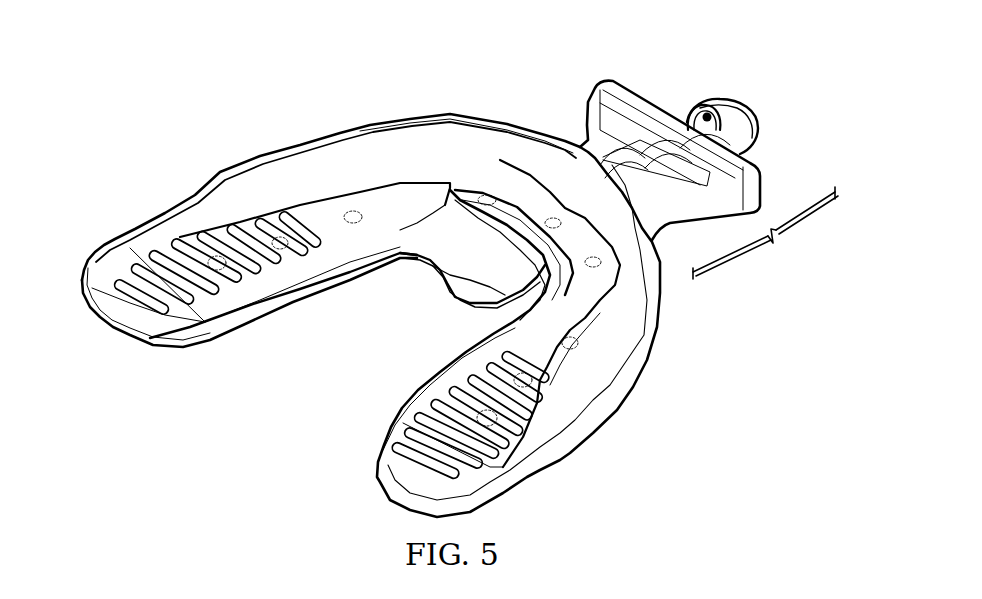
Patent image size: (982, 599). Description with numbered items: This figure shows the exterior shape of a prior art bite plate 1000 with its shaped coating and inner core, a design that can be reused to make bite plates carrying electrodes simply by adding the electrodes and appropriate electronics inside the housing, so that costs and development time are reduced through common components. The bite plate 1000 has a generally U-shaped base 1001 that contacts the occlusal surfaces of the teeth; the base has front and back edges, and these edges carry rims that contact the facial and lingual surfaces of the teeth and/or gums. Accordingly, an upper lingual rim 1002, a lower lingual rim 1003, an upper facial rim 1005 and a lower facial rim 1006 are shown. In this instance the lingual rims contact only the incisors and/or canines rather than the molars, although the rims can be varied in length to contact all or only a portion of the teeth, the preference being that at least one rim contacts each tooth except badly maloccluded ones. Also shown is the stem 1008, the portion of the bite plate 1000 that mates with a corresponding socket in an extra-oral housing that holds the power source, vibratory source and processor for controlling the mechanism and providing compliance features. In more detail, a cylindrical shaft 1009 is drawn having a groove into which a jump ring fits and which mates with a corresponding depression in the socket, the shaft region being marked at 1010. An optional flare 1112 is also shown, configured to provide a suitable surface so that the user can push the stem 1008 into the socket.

The bite plate 1000 is at (238, 136).
The base 1001 is at (100, 257).
The upper lingual rim 1002 is at (453, 185).
The lower lingual rim 1003 is at (460, 288).
The upper facial rim 1005 is at (490, 120).
The lower facial rim 1006 is at (620, 407).
The stem 1008 is at (766, 235).
The cylindrical shaft 1009 is at (760, 127).
The knob ring 1010 is at (706, 112).
The flare 1112 is at (617, 80).